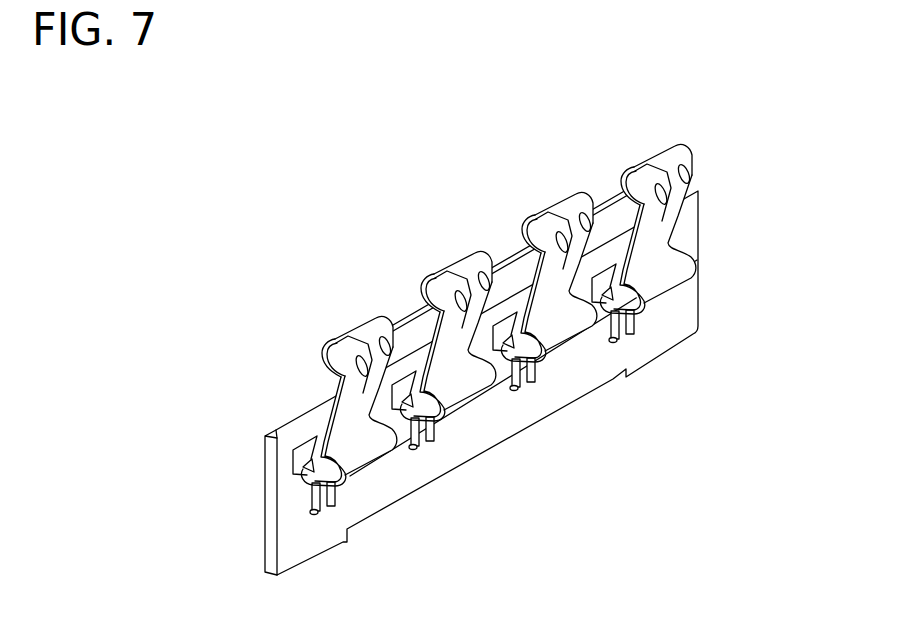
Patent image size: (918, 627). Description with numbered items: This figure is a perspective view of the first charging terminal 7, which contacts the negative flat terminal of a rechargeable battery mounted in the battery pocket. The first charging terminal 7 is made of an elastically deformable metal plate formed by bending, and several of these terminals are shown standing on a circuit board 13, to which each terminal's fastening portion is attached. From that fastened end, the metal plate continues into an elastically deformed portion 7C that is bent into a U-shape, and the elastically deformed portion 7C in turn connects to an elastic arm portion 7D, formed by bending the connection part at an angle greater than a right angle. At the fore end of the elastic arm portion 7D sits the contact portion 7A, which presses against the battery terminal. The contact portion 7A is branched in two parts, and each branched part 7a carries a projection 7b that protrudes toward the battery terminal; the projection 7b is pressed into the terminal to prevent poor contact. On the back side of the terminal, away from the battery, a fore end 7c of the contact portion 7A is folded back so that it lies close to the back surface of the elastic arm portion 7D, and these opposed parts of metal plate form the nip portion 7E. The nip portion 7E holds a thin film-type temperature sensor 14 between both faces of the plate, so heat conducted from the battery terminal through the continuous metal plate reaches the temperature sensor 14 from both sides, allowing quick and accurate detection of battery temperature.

The first charging terminal 7 is at (369, 506).
The contact portion 7A is at (411, 360).
The branched part 7a is at (323, 347).
The projection 7b is at (360, 328).
The fore end of the contact portion 7c is at (320, 375).
The elastically deformed portion 7C is at (355, 460).
The elastic arm portion 7D is at (355, 412).
The nip portion 7E is at (319, 400).
The circuit board 13 is at (507, 408).
The temperature sensor 14 is at (380, 380).